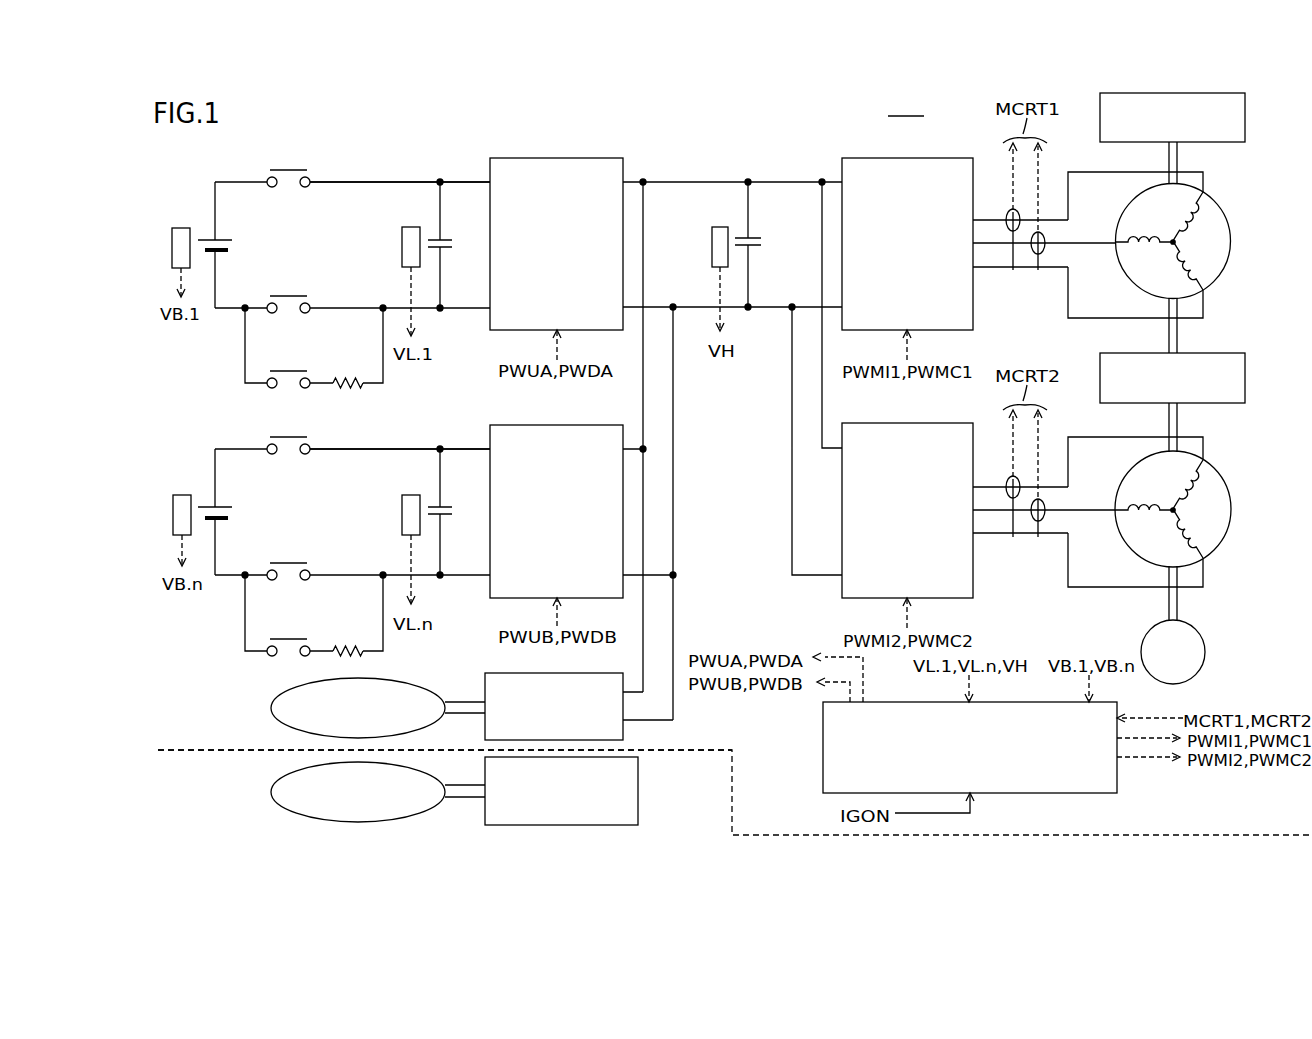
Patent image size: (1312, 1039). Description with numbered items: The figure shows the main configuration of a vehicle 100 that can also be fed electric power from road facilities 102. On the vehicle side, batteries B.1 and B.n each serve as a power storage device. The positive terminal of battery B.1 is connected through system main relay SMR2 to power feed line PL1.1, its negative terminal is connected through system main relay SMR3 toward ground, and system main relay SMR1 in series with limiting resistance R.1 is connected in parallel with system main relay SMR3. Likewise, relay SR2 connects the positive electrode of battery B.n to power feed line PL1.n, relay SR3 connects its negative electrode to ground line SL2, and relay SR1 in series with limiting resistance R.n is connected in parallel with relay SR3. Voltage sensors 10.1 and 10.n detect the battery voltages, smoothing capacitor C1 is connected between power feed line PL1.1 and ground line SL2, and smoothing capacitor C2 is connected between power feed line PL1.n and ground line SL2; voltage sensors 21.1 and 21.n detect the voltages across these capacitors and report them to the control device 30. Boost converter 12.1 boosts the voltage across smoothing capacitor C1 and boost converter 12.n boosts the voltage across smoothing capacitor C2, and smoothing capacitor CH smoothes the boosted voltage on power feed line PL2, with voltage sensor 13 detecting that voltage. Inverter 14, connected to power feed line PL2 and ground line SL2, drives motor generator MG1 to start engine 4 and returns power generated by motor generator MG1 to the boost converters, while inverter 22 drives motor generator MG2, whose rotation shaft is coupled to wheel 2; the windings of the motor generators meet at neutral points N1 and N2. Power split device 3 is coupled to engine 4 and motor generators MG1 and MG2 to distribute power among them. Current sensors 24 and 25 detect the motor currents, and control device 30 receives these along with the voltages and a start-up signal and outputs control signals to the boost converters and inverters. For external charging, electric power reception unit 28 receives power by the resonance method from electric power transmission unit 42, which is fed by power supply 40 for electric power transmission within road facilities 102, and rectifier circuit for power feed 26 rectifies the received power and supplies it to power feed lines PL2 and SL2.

The vehicle 100 is at (906, 107).
The road facilities 102 is at (239, 808).
The voltage sensor 10.1 is at (182, 228).
The voltage sensor 10.n is at (182, 495).
The boost converter 12.1 is at (572, 158).
The boost converter 12.n is at (572, 425).
The voltage sensor 13 is at (720, 227).
The inverter 14 is at (927, 158).
The inverter 22 is at (927, 423).
The voltage sensor 21.1 is at (412, 227).
The voltage sensor 21.n is at (412, 495).
The current sensor 24 is at (1025, 221).
The current sensor 25 is at (1025, 488).
The rectifier circuit for power feed 26 is at (580, 673).
The electric power reception unit 28 is at (418, 683).
The control device 30 is at (1058, 793).
The power supply for electric power transmission 40 is at (593, 825).
The electric power transmission unit 42 is at (418, 816).
The wheel 2 is at (1205, 652).
The power split device 3 is at (1218, 353).
The engine 4 is at (1245, 117).
The battery B.1 is at (230, 240).
The battery B.n is at (230, 507).
The system main relay SMR1 is at (284, 371).
The system main relay SMR2 is at (284, 170).
The system main relay SMR3 is at (284, 296).
The relay SR1 is at (284, 639).
The relay SR2 is at (284, 437).
The relay SR3 is at (284, 563).
The limiting resistance R.1 is at (350, 380).
The limiting resistance R.n is at (350, 648).
The smoothing capacitor C1 is at (448, 250).
The smoothing capacitor C2 is at (448, 518).
The smoothing capacitor CH is at (758, 238).
The power feed line PL1.1 is at (421, 182).
The power feed line PL1.n is at (421, 449).
The power feed line PL2 is at (692, 182).
The ground line SL2 is at (688, 307).
The motor generator MG1 is at (1213, 200).
The motor generator MG2 is at (1213, 465).
The neutral point N1 is at (1176, 242).
The node N2 is at (1176, 510).